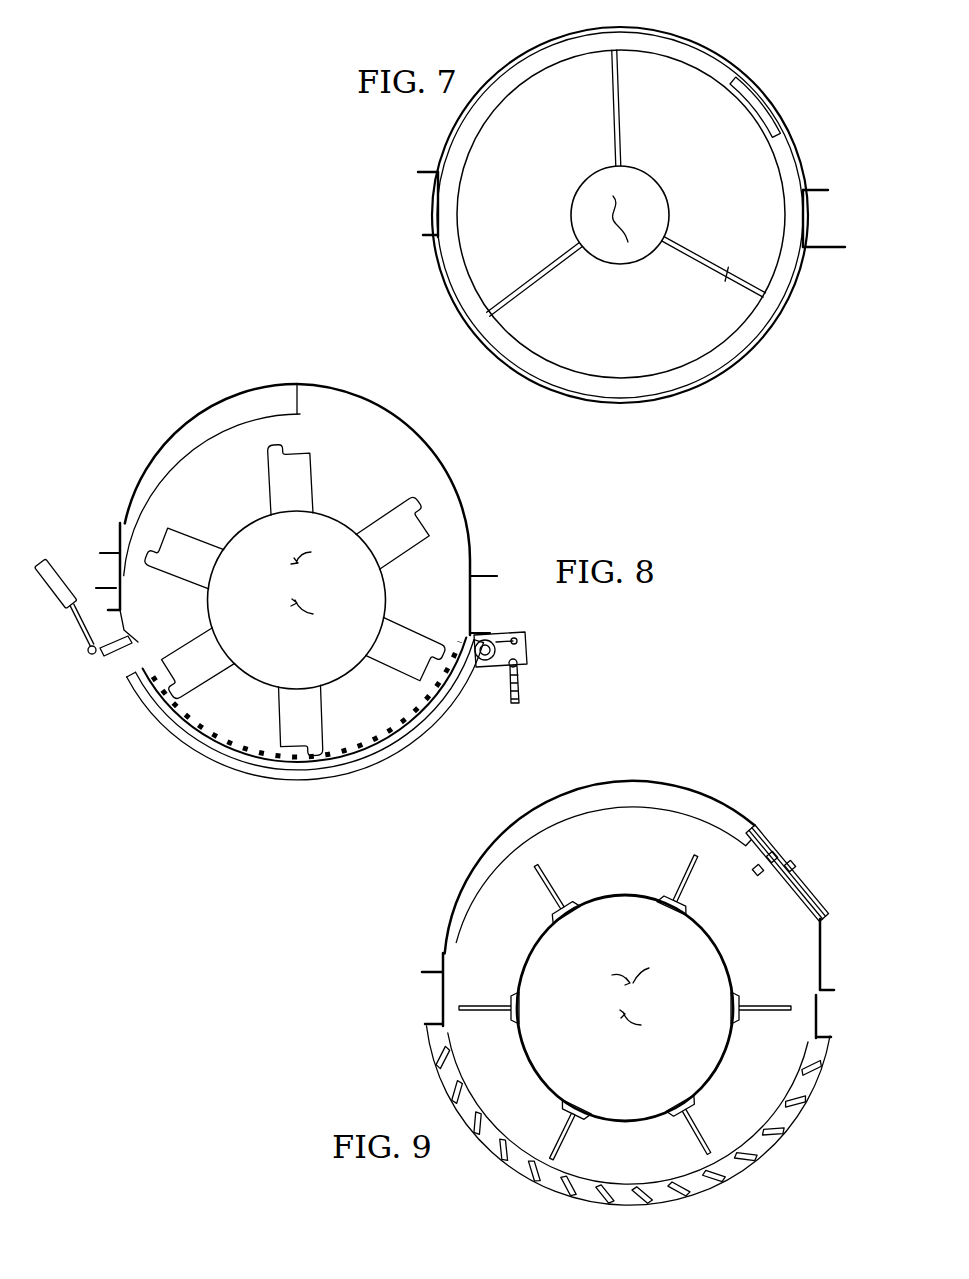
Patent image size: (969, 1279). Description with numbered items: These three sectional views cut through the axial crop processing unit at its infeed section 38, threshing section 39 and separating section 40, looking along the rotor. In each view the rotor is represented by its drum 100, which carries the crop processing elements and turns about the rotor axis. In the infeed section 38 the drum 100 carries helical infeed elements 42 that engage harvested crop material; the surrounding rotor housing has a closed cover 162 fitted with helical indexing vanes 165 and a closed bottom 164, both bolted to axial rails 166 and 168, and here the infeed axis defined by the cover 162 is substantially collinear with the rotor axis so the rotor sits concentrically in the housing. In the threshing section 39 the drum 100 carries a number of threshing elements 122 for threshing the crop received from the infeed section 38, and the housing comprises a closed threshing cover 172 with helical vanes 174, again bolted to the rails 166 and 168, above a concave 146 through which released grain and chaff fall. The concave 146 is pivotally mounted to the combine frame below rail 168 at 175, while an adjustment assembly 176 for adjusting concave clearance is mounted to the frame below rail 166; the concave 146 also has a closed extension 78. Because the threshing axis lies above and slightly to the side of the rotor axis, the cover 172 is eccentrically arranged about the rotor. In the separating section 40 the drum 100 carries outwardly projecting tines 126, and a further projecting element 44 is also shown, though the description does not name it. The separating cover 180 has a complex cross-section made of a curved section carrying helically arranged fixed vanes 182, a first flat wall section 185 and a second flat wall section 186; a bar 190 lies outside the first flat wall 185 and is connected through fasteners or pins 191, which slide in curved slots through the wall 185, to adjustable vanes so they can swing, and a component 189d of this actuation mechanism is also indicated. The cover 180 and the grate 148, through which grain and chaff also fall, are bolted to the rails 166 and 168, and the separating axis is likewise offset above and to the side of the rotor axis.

In FIG. 7, the infeed section 38 is at (797, 123).
In FIG. 8, the threshing section 39 is at (474, 483).
In FIG. 9, the separating section 40 is at (597, 768).
In FIG. 7, the helical infeed elements 42 is at (539, 184).
In FIG. 9, the support pin 44 is at (702, 1126).
In FIG. 8, the closed extension 78 is at (121, 620).
In FIG. 7, the drum 100 is at (621, 266).
In FIG. 8, the drum 100 is at (243, 676).
In FIG. 9, the drum 100 is at (719, 952).
In FIG. 8, the threshing elements 122 is at (399, 508).
In FIG. 9, the outwardly projecting tines 126 is at (684, 878).
In FIG. 8, the concave 146 is at (265, 782).
In FIG. 9, the grate 148 is at (578, 1200).
In FIG. 7, the closed cover 162 is at (657, 30).
In FIG. 7, the closed bottom 164 is at (747, 357).
In FIG. 7, the helical indexing vanes 165 is at (753, 93).
In FIG. 7, the axial rail 166 is at (436, 204).
In FIG. 8, the axial rail 166 is at (116, 584).
In FIG. 9, the axial rail 166 is at (441, 1000).
In FIG. 8, the axial rail 168 is at (476, 600).
In FIG. 9, the axial rail 168 is at (818, 1014).
In FIG. 8, the closed threshing cover 172 is at (321, 386).
In FIG. 8, the helical vanes 174 is at (193, 430).
In FIG. 8, the pivot mounting 175 is at (485, 692).
In FIG. 8, the adjustment assembly 176 is at (72, 667).
In FIG. 9, the separating cover 180 is at (650, 781).
In FIG. 9, the fixed vanes 182 is at (701, 818).
In FIG. 9, the first flat wall section 185 is at (812, 895).
In FIG. 9, the second flat wall section 186 is at (822, 952).
In FIG. 9, the fastener 189d is at (756, 874).
In FIG. 9, the bar 190 is at (773, 852).
In FIG. 9, the fasteners or pins 191 is at (793, 862).